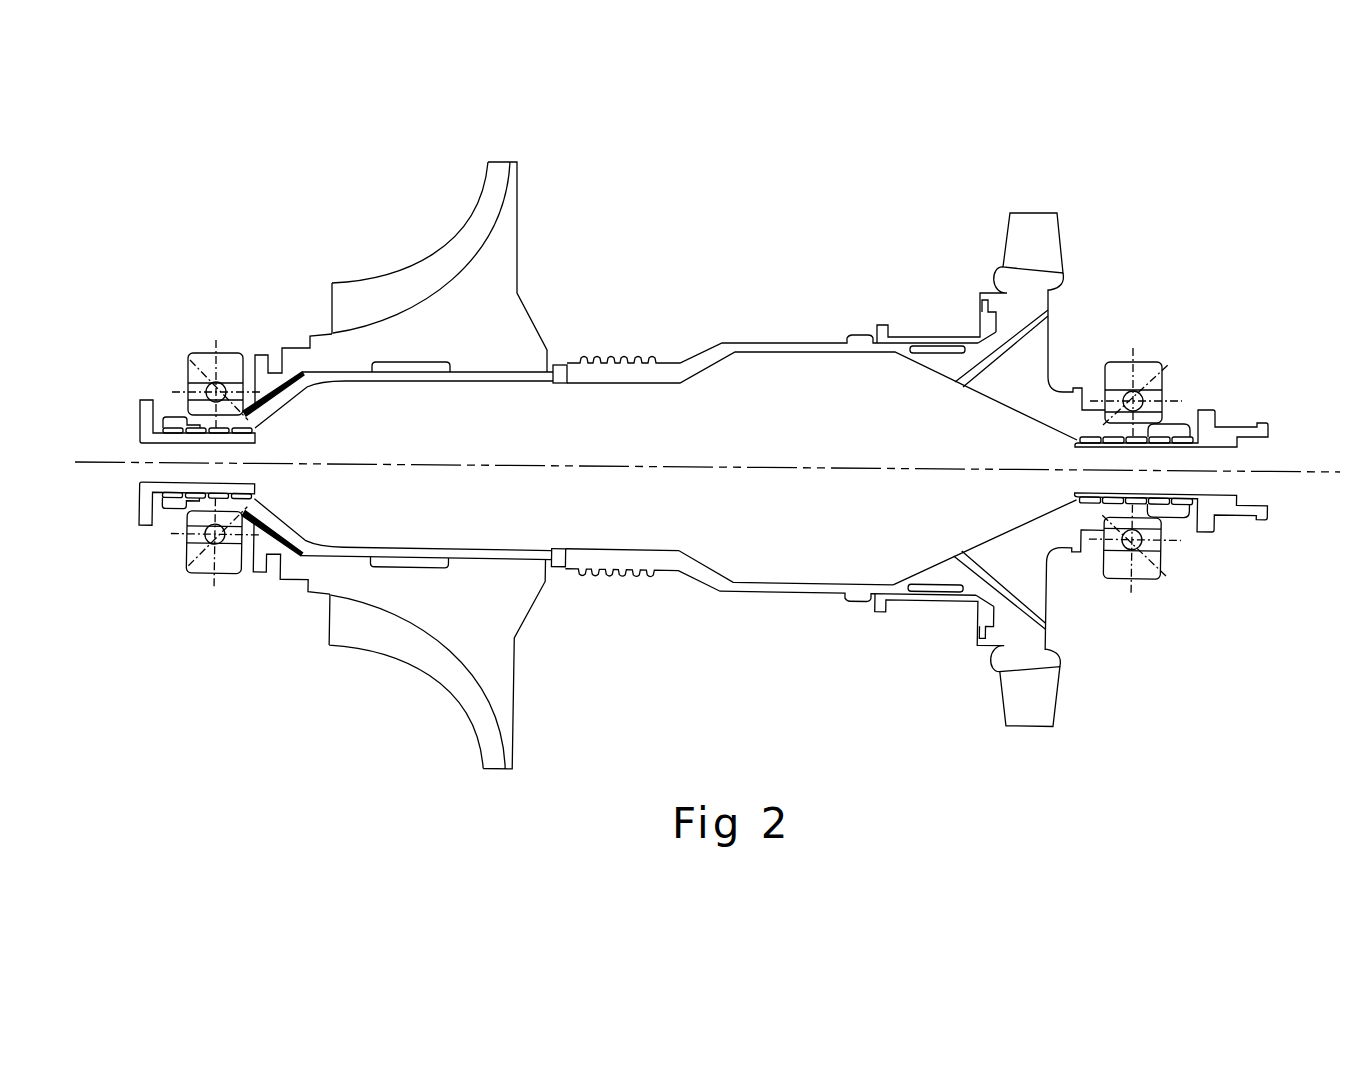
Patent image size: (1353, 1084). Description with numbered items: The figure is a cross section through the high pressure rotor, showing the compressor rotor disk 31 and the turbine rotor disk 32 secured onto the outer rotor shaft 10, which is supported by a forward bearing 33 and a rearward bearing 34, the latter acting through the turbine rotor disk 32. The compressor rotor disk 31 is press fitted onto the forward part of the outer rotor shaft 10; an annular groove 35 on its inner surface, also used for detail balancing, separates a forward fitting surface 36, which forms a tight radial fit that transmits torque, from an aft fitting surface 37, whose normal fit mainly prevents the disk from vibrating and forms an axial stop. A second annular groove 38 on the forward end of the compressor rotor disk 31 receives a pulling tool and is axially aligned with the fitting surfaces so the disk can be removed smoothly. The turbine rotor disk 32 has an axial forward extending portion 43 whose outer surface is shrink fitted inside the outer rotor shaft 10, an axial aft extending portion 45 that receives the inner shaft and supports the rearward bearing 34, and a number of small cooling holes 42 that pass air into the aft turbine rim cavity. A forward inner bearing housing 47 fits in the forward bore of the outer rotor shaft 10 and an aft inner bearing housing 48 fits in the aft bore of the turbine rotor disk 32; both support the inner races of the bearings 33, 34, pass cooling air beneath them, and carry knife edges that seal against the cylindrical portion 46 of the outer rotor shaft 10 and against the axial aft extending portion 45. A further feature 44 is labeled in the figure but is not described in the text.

The outer rotor shaft 10 is at (782, 288).
The compressor rotor disk 31 is at (497, 262).
The turbine rotor disk 32 is at (1037, 292).
The forward bearing 33 is at (205, 367).
The rearward bearing 34 is at (1118, 373).
The annular groove 35 is at (450, 556).
The forward fitting surface 36 is at (323, 375).
The aft fitting surface 37 is at (533, 373).
The annular groove 38 is at (278, 360).
The holes 42 is at (1028, 607).
The axial forward extending portion 43 is at (950, 363).
The shaft cone portion 44 is at (935, 585).
The axial aft extending portion 45 is at (1175, 430).
The cylindrical portion 46 is at (175, 422).
The forward inner bearing housing 47 is at (145, 505).
The aft inner bearing housing 48 is at (1223, 437).